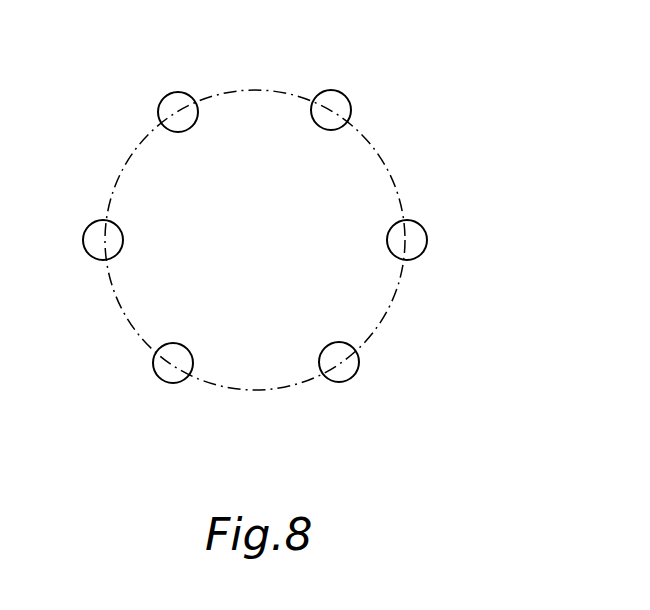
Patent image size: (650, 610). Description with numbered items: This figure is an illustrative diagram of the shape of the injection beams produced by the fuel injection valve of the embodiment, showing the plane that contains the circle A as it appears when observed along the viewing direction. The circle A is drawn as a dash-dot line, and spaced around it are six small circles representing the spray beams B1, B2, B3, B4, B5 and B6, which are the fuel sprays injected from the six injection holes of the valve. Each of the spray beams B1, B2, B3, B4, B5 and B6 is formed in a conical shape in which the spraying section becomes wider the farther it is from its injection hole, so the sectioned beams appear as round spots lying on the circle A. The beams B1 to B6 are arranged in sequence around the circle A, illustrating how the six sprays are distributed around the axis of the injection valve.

The circle A is at (386, 163).
The spray beam B1 is at (421, 233).
The spray beam B2 is at (349, 377).
The spray beam B3 is at (163, 377).
The spray beam B4 is at (87, 233).
The spray beam B5 is at (161, 108).
The spray beam B6 is at (342, 104).